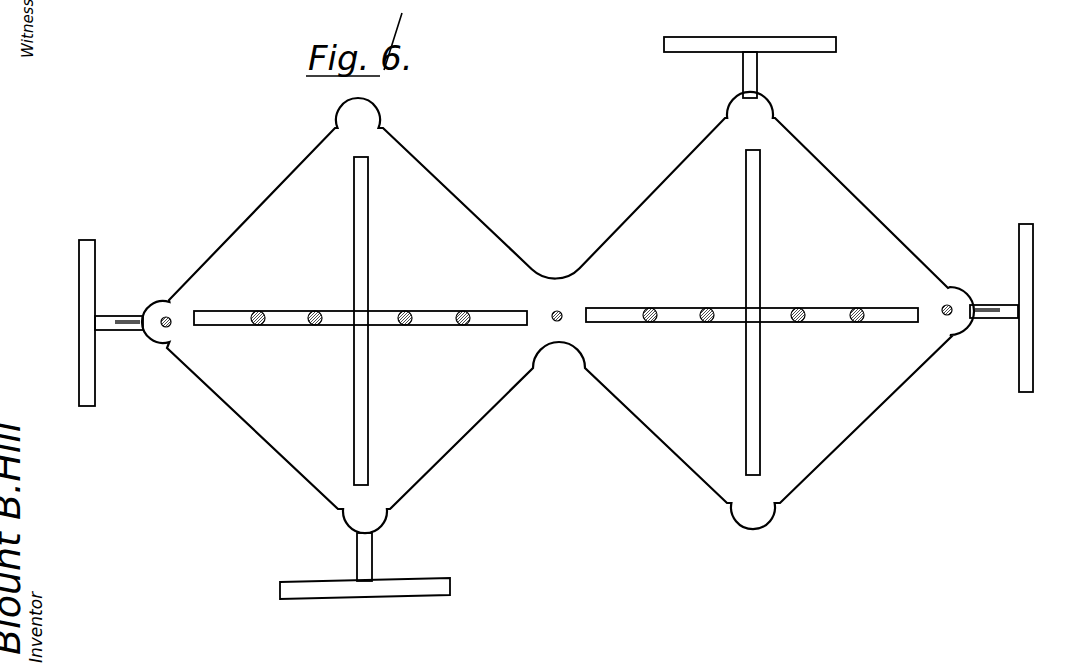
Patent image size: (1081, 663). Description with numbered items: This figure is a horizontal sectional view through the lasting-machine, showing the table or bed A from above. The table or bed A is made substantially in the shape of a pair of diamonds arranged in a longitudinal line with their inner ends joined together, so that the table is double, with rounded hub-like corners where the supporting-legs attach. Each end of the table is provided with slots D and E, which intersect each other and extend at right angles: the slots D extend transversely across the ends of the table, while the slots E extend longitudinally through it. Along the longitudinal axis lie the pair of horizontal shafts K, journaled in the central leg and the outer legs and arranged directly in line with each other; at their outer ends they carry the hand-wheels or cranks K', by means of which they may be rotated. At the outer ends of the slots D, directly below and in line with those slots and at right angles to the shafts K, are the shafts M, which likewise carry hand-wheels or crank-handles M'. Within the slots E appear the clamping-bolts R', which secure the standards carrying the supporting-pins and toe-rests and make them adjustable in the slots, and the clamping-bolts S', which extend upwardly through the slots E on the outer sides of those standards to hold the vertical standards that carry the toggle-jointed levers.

The table or bed A is at (670, 435).
The slots D is at (368, 360).
The slots E is at (238, 341).
The longitudinal horizontal shafts K is at (556, 333).
The hand-wheels or cranks K' is at (556, 315).
The shafts M is at (575, 316).
The hand-wheels or crank-handles M' is at (560, 317).
The clamping-bolts R' is at (557, 331).
The clamping-bolts S' is at (569, 332).